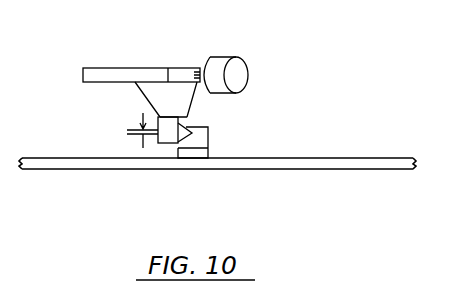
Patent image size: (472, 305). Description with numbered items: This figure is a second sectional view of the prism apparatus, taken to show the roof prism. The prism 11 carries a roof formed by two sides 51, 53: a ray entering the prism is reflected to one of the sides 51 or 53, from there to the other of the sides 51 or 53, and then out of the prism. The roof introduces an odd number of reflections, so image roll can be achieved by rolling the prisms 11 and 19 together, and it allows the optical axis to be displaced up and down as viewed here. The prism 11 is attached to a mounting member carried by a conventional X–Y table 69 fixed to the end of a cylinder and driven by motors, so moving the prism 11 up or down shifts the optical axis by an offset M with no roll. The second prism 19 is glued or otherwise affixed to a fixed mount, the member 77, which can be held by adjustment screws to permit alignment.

The prism 11 is at (128, 130).
The prism 19 is at (210, 132).
The side 51 is at (185, 122).
The side 53 is at (190, 170).
The X–Y table 69 is at (158, 67).
The member 77 is at (303, 158).
The offset M is at (143, 148).